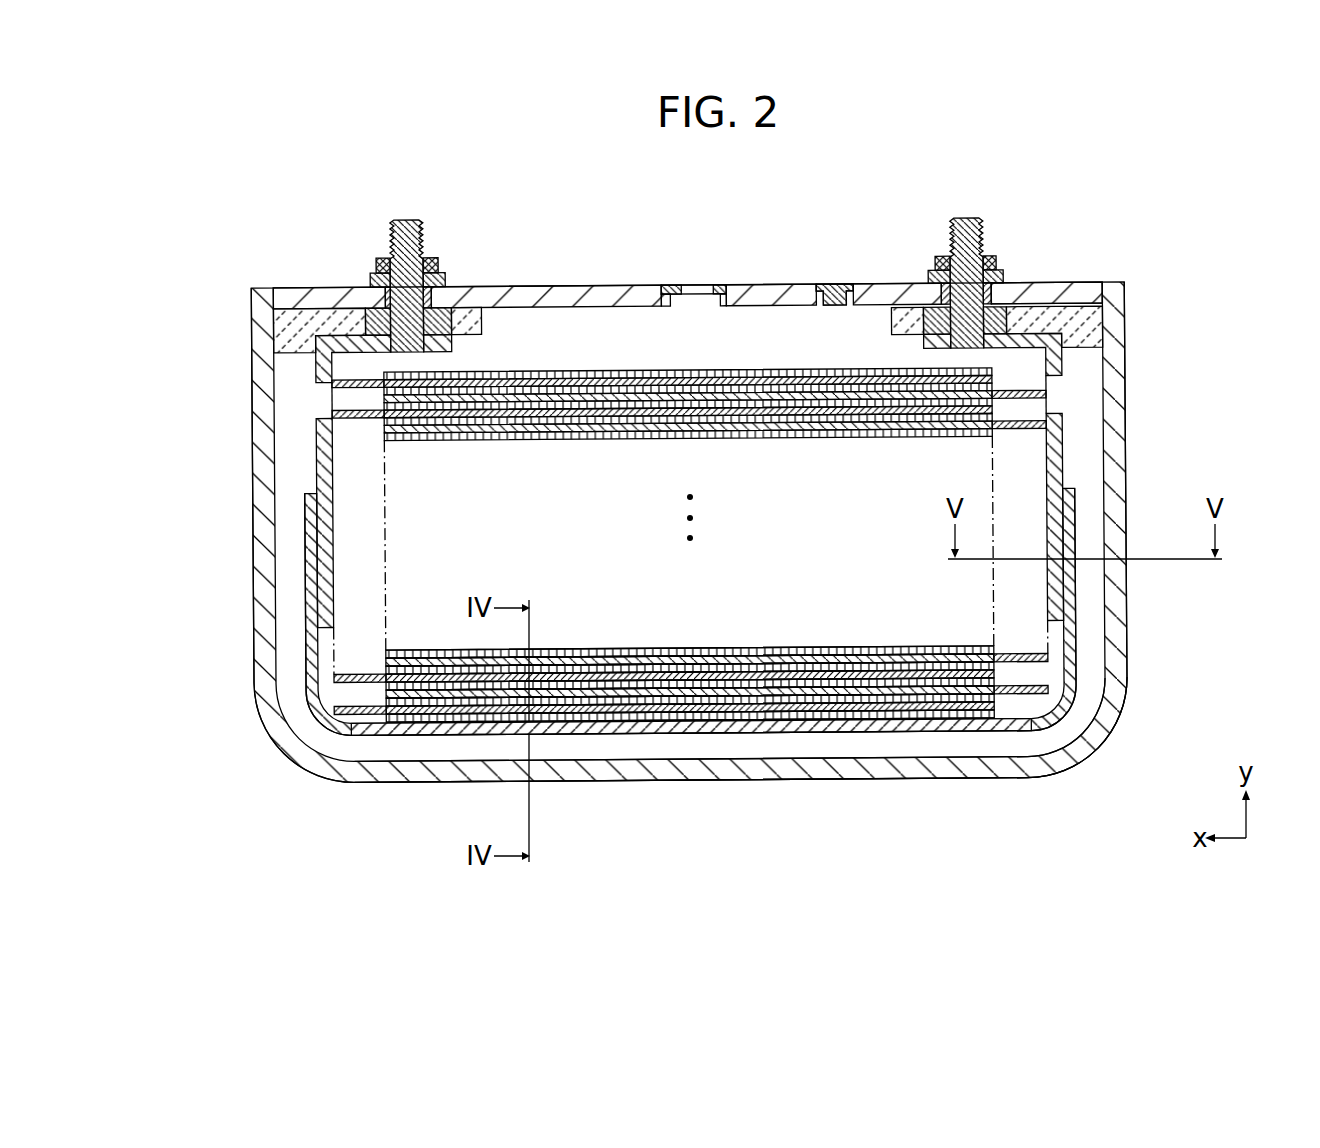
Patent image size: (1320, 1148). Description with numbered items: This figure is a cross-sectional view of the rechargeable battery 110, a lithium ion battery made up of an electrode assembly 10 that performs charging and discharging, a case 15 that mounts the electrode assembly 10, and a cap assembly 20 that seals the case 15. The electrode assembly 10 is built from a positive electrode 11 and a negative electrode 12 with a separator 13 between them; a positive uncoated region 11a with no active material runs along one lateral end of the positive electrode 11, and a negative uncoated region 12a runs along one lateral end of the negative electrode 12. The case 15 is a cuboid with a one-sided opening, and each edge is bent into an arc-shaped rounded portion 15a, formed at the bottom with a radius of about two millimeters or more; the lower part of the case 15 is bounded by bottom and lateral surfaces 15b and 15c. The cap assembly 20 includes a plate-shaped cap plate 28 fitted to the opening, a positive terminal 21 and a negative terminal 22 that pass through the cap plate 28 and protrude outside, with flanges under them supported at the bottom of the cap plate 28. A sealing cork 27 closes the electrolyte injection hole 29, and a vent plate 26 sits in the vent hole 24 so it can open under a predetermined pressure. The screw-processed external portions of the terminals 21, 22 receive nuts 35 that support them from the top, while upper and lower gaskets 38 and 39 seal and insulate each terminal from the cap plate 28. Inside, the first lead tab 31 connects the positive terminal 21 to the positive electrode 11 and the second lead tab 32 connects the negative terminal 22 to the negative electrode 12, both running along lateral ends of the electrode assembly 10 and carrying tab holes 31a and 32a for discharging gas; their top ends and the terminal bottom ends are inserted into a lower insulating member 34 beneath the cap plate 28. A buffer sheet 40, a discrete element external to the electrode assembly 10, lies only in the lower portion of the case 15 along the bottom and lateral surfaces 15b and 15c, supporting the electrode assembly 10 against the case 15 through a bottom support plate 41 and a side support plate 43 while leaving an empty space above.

The rechargeable battery 110 is at (887, 170).
The electrode assembly 10 is at (767, 725).
The positive electrode 11 is at (432, 712).
The positive uncoated region 11a is at (344, 712).
The negative electrode 12 is at (893, 690).
The negative uncoated region 12a is at (1030, 698).
The separator 13 is at (620, 684).
The case 15 is at (1118, 490).
The rounded portion 15a is at (1105, 752).
The bottom surface 15b is at (961, 760).
The lateral surface 15c is at (1115, 692).
The cap assembly 20 is at (760, 286).
The positive terminal 21 is at (408, 218).
The negative terminal 22 is at (968, 220).
The vent hole 24 is at (685, 290).
The vent plate 26 is at (722, 286).
The sealing cork 27 is at (832, 288).
The cap plate 28 is at (1060, 292).
The electrolyte injection hole 29 is at (846, 288).
The first lead tab 31 is at (320, 505).
The tab hole 31a is at (325, 397).
The second lead tab 32 is at (1058, 586).
The tab hole 32a is at (1062, 398).
The lower insulating member 34 is at (292, 330).
The nut 35 is at (385, 258).
The upper gasket 38 is at (375, 274).
The lower gasket 39 is at (387, 297).
The buffer sheet 40 is at (833, 733).
The bottom support plate 41 is at (687, 727).
The side support plate 43 is at (310, 582).